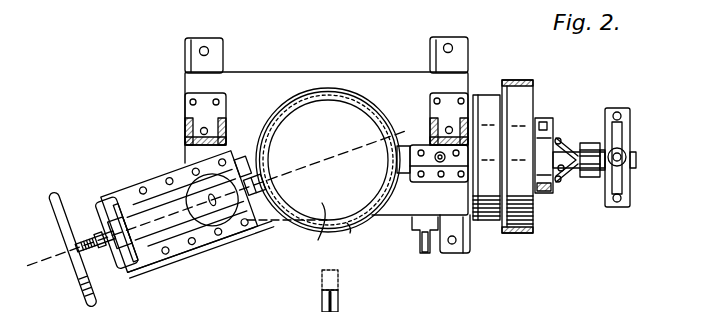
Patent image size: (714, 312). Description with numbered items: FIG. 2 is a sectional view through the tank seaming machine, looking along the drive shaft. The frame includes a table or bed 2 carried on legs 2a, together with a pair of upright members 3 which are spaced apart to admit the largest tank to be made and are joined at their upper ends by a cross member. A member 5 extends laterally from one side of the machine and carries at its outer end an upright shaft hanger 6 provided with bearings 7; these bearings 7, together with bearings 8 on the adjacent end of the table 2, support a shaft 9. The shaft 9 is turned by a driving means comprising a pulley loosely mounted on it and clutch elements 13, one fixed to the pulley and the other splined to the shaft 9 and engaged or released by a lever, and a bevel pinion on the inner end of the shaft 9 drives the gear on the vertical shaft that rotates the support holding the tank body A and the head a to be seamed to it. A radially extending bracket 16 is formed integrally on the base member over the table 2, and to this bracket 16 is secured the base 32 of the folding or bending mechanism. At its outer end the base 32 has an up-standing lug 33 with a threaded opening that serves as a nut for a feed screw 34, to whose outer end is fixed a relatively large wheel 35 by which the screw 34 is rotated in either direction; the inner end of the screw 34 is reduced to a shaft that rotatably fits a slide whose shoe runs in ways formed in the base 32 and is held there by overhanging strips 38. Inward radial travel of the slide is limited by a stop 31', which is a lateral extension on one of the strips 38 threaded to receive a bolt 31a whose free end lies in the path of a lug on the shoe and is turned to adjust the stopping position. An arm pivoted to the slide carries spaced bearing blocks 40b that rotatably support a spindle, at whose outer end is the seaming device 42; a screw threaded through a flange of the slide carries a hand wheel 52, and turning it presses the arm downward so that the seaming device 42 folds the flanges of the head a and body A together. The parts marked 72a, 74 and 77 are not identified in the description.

The table or bed 2 is at (326, 146).
The legs 2a is at (224, 57).
The upright members 3 is at (226, 133).
The extension member 5 is at (590, 172).
The shaft hanger 6 is at (625, 189).
The bearings 7 is at (627, 141).
The bearings 8 is at (434, 170).
The shaft 9 is at (562, 153).
The clutch elements 13 is at (562, 172).
The bracket 16 is at (211, 255).
The stop 31' is at (200, 224).
The bolt 31a is at (157, 250).
The base 32 is at (106, 228).
The up-standing lug 33 is at (121, 256).
The feed screw 34 is at (91, 229).
The wheel 35 is at (93, 245).
The overhanging strips 38 is at (183, 199).
The bearing blocks 40b is at (227, 151).
The seaming device 42 is at (262, 166).
The hand wheel 52 is at (221, 213).
The wheel 72a is at (518, 104).
The sleeve 74 is at (588, 147).
The ring 77 is at (357, 235).
The head a is at (319, 229).
The tank body A is at (306, 108).